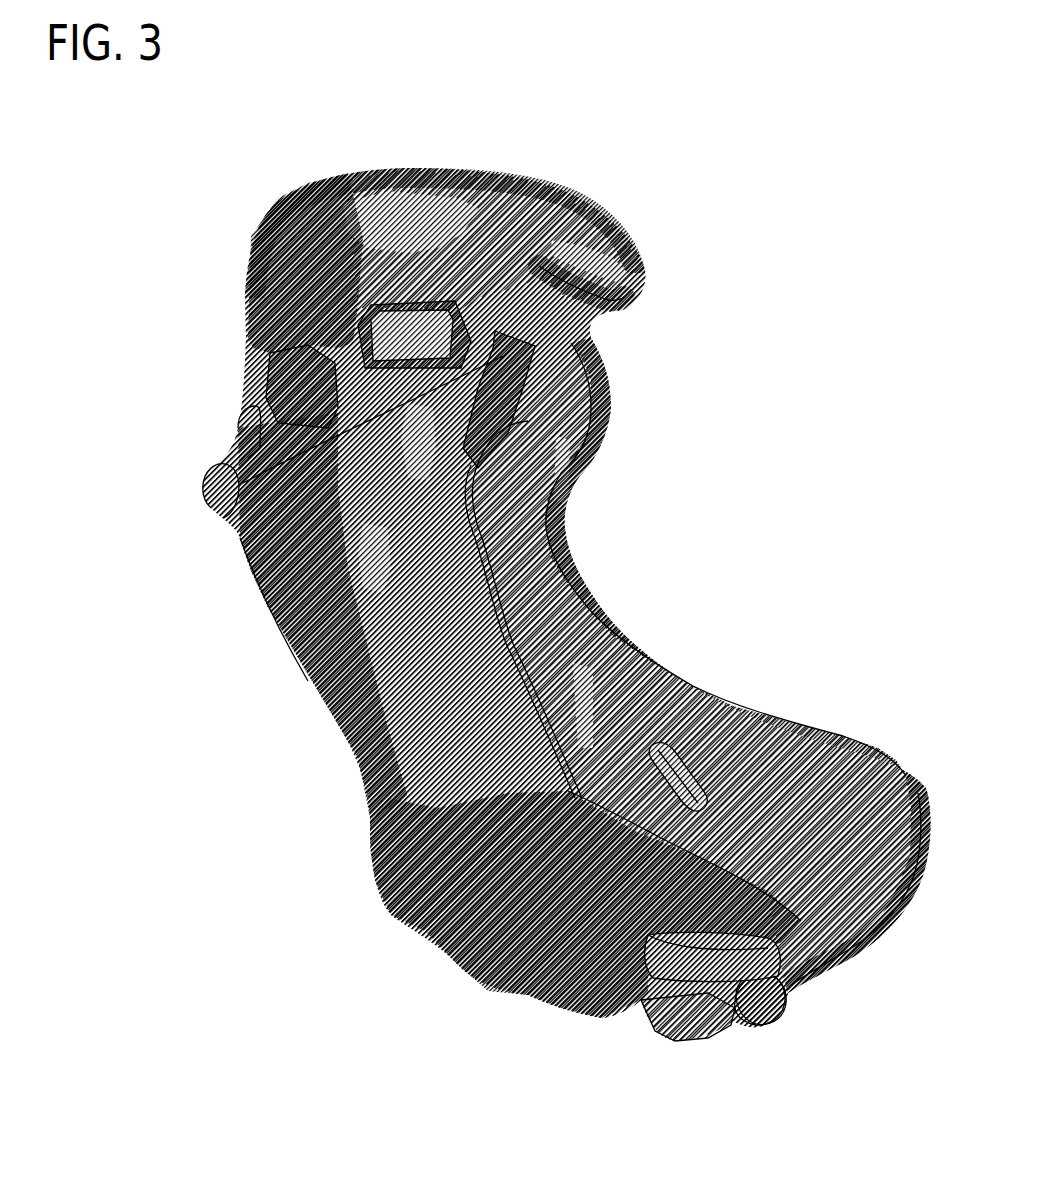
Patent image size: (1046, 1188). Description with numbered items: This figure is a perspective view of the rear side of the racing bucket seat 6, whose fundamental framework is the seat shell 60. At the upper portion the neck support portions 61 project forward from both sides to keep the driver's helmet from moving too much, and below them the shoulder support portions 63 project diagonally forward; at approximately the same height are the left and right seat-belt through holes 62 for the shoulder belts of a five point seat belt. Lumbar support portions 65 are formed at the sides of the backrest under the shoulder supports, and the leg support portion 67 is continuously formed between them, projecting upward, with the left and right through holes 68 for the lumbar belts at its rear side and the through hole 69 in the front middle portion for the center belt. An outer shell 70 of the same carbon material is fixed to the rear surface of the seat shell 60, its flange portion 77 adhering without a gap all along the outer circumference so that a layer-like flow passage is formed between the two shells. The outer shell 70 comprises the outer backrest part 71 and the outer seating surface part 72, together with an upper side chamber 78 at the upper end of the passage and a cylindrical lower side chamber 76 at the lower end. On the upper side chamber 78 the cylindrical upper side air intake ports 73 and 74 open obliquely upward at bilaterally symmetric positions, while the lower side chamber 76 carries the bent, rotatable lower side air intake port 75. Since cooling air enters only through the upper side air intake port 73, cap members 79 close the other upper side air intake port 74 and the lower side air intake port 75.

The racing bucket seat 6 is at (300, 752).
The seat shell 60 is at (447, 195).
The neck support portions 61 is at (622, 228).
The seat-belt through holes 62 is at (374, 316).
The shoulder support portions 63 is at (567, 340).
The lumbar support portions 65 is at (567, 575).
The leg support portion 67 is at (800, 730).
The through holes 68 is at (665, 762).
The through hole 69 is at (643, 957).
The outer shell 70 is at (330, 655).
The outer backrest part 71 is at (327, 592).
The outer seating surface part 72 is at (534, 967).
The upper side air intake port 73 is at (520, 345).
The upper side air intake port 74 is at (215, 473).
The lower side air intake port 75 is at (727, 1012).
The lower side chamber 76 is at (670, 985).
The flange portion 77 is at (500, 412).
The upper side chamber 78 is at (305, 477).
The cap members 79 is at (222, 478).